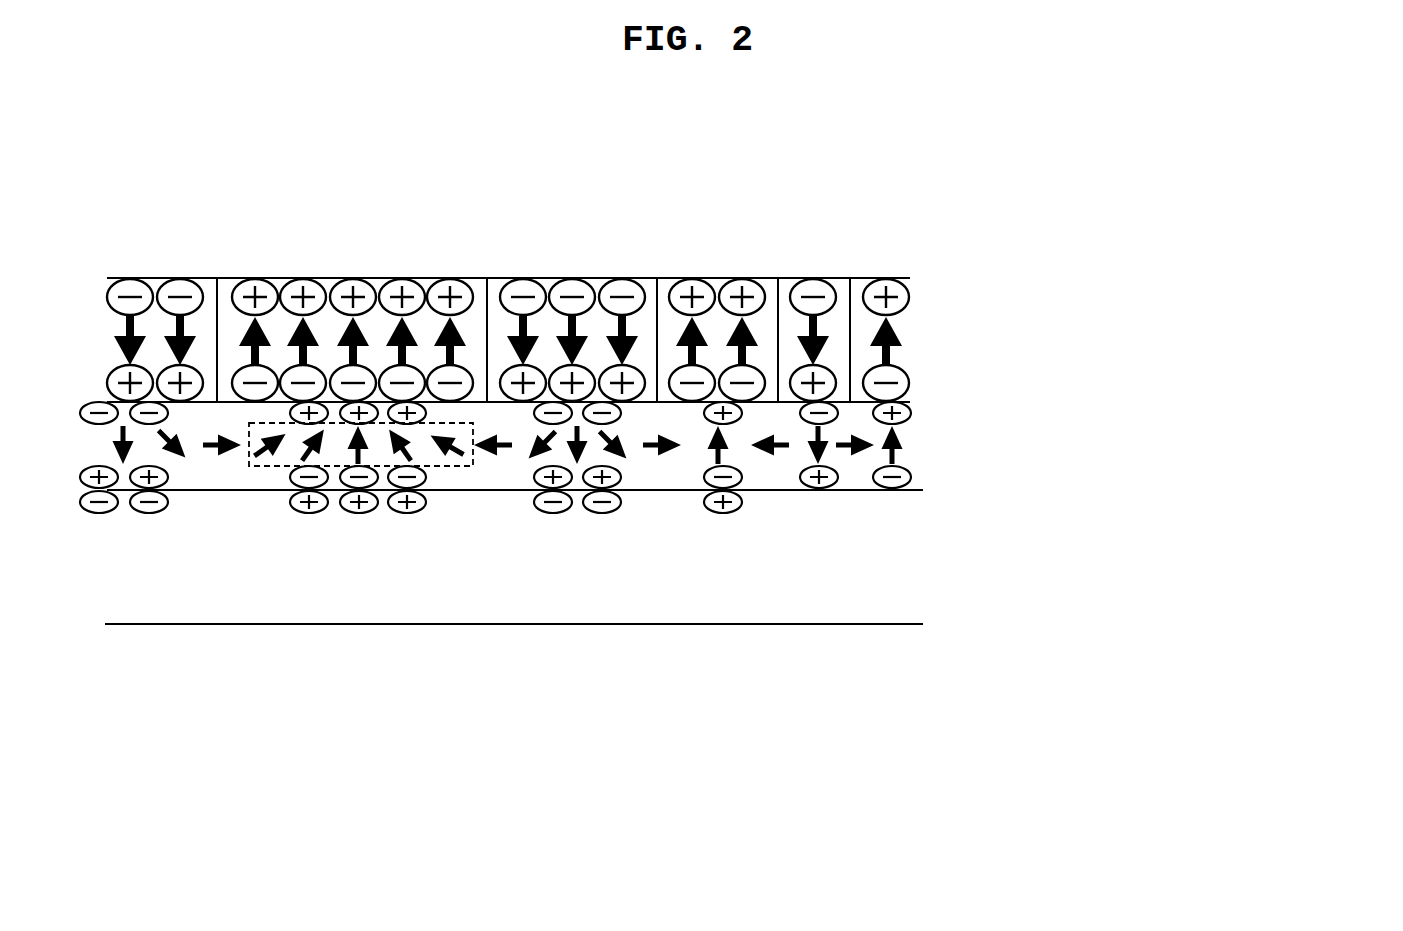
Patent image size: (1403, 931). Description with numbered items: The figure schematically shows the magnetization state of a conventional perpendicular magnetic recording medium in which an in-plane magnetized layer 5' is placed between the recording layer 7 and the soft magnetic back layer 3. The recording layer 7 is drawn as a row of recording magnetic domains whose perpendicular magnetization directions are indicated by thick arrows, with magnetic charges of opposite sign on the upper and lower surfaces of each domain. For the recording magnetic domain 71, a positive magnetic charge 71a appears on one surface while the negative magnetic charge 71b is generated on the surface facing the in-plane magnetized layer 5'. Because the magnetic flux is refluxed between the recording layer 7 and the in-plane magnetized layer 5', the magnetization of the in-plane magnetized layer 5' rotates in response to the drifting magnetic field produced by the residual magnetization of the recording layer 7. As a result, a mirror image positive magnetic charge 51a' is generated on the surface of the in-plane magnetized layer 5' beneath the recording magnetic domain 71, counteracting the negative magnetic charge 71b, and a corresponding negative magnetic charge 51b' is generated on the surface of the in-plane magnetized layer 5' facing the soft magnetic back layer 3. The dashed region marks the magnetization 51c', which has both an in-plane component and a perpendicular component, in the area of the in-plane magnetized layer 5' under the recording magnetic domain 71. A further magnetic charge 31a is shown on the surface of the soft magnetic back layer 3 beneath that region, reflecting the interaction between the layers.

The recording layer 7 is at (669, 340).
The recording magnetic domain 71 is at (352, 290).
The positive magnetic charge 71a is at (376, 247).
The negative magnetic charge 71b is at (433, 290).
The in-plane magnetized layer 5' is at (741, 446).
The positive magnetic charge 51a' is at (290, 500).
The negative magnetic charge 51b' is at (440, 517).
The magnetization 51c' is at (403, 503).
The soft magnetic back layer 3 is at (738, 557).
The magnetic charge of soft magnetic back layer 31a is at (365, 544).